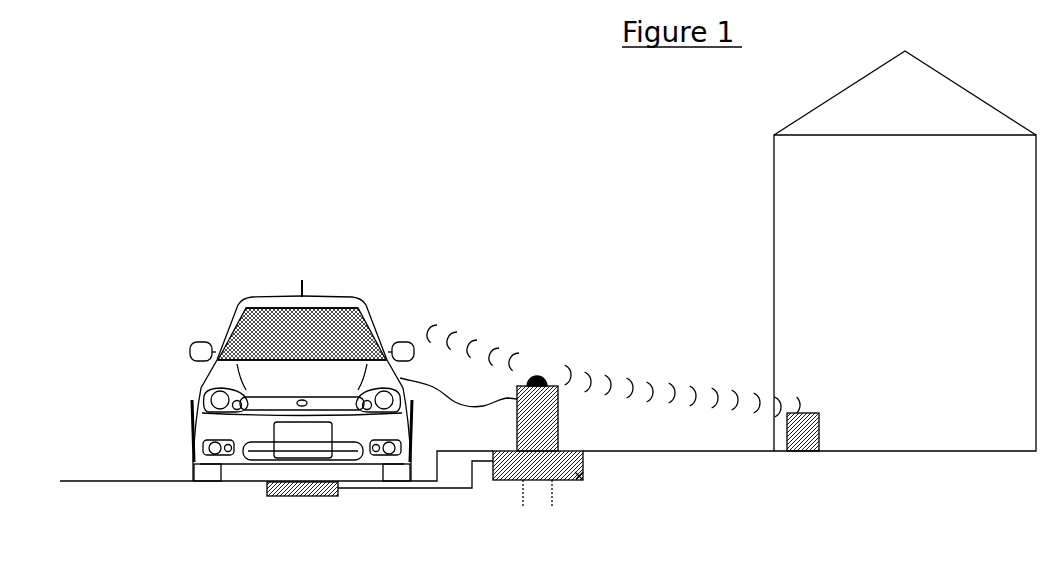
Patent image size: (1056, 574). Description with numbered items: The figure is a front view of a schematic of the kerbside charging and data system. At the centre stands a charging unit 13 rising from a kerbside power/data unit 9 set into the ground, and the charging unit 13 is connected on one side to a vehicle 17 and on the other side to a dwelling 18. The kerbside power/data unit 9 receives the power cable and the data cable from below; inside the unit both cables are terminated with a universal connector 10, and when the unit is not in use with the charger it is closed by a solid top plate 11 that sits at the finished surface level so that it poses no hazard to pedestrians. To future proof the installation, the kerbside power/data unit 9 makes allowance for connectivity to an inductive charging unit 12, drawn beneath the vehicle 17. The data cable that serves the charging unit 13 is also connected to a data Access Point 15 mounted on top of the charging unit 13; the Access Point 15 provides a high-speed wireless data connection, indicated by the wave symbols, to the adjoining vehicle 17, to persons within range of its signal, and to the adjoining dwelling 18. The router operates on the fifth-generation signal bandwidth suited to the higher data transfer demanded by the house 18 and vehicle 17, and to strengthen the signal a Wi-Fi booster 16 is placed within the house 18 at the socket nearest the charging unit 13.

The kerbside power/data unit 9 is at (549, 465).
The universal connector 10 is at (582, 471).
The top plate 11 is at (629, 498).
The inductive charging unit 12 is at (267, 496).
The charging unit 13 is at (555, 418).
The data Access Point 15 is at (543, 382).
The Wi-Fi booster 16 is at (820, 432).
The vehicle 17 is at (324, 290).
The dwelling 18 is at (905, 251).